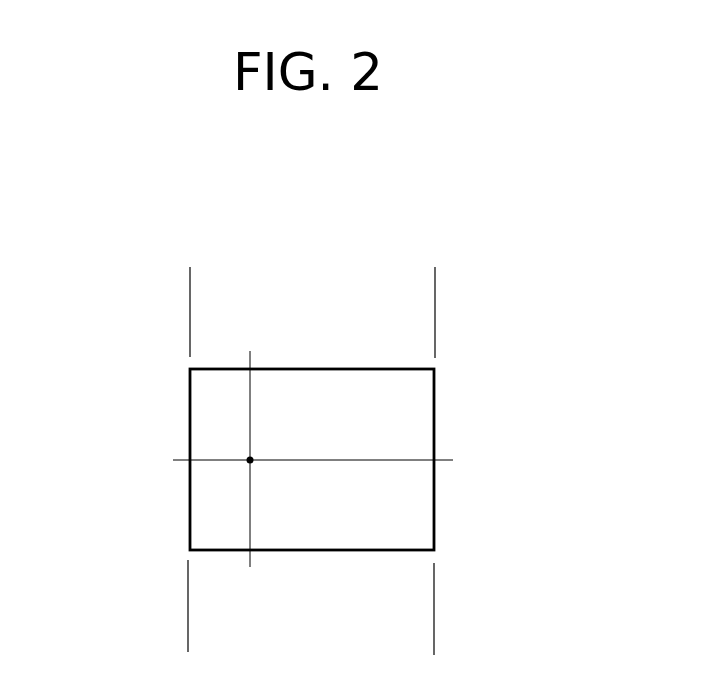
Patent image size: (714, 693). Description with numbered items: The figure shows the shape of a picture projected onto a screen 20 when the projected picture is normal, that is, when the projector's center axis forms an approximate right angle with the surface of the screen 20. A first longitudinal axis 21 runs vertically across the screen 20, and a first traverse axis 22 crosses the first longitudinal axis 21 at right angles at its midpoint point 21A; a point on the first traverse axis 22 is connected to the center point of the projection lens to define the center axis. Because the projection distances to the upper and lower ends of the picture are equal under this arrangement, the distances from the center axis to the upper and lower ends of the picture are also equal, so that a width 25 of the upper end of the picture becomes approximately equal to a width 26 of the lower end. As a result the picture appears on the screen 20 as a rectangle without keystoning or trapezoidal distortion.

The screen 20 is at (332, 202).
The first longitudinal axis 21 is at (251, 386).
The midpoint point 21A is at (250, 460).
The first traverse axis 22 is at (182, 458).
The width of the upper end of the picture 25 is at (190, 279).
The width of the lower end of the picture 26 is at (188, 640).